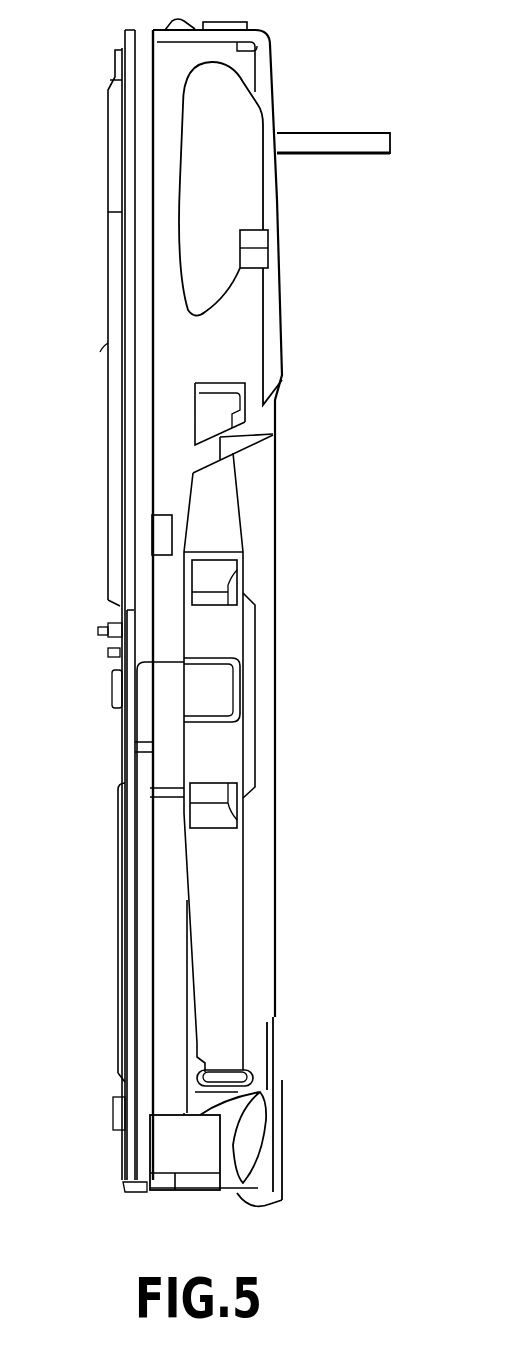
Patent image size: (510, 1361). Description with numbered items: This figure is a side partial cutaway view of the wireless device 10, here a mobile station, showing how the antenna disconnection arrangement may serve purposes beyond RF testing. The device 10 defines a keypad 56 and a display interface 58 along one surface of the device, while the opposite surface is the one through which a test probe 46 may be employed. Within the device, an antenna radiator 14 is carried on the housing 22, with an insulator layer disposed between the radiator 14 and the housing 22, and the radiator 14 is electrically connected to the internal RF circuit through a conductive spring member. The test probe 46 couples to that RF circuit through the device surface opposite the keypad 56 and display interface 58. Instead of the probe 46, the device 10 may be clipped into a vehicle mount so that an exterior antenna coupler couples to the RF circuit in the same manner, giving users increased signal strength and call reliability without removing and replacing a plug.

The wireless device 10 is at (360, 580).
The antenna radiator 14 is at (282, 288).
The housing 22 is at (263, 466).
The test probe 46 is at (350, 153).
The keypad 56 is at (118, 893).
The upper side strip 58 is at (107, 343).